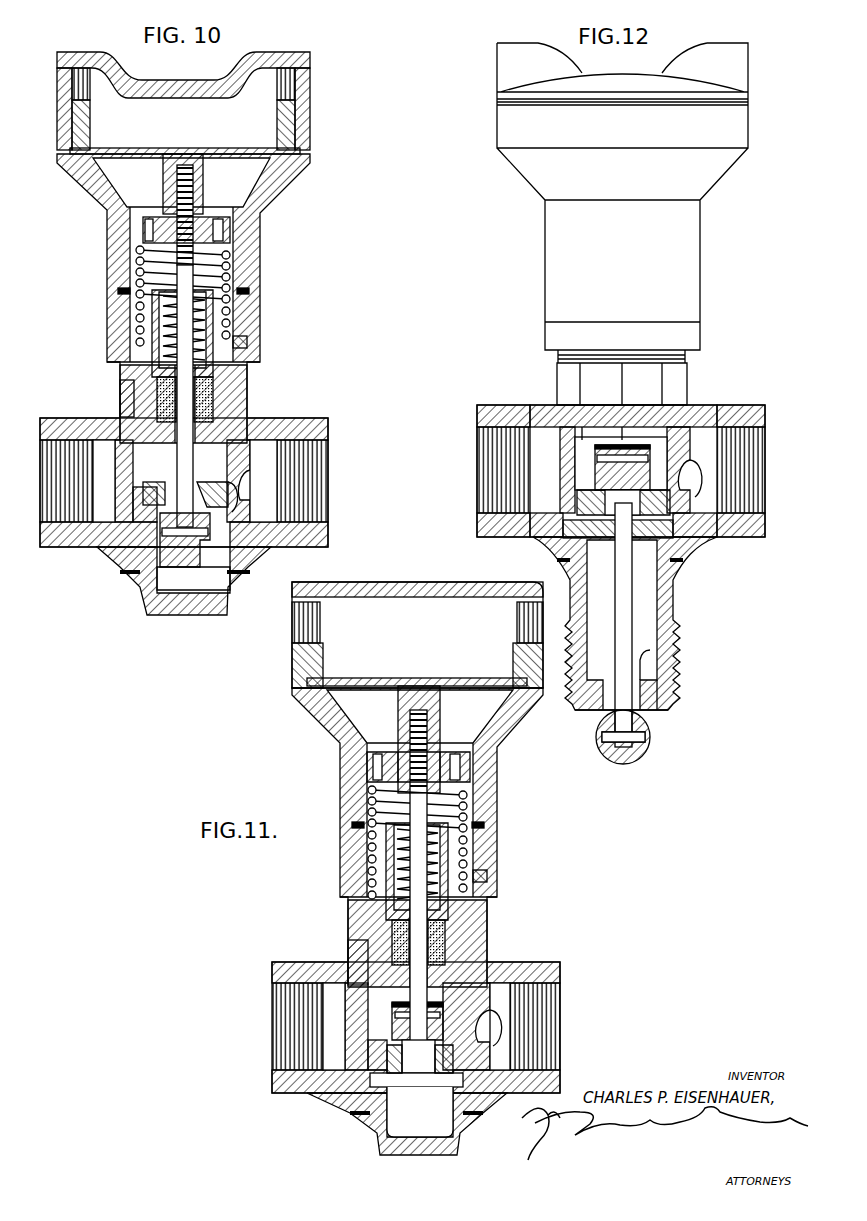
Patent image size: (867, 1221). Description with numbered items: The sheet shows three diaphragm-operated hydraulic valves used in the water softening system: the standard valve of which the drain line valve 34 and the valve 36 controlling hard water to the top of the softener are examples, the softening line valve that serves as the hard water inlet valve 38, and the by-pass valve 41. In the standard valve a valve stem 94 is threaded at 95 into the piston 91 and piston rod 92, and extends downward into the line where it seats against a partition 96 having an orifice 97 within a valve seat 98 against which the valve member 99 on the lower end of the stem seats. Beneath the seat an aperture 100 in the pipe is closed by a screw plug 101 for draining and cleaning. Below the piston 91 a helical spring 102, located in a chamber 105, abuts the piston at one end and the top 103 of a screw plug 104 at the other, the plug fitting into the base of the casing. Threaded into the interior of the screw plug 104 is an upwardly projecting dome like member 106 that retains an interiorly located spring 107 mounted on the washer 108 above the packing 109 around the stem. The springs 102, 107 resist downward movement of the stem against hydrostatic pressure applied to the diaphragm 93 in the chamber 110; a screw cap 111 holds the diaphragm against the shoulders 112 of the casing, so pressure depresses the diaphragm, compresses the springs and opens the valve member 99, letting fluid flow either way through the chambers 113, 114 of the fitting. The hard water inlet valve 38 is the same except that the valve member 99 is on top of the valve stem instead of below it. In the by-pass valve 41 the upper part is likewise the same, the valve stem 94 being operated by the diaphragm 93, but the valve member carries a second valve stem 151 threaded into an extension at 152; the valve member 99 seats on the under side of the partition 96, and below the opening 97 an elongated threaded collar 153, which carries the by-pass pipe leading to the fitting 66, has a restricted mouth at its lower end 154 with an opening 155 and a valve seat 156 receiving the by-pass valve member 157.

In FIG. 10, the drain line valve 34 is at (127, 50).
In FIG. 10, the valve controlling passage of hard water to the top of the softener 36 is at (63, 52).
In FIG. 11, the hard water inlet valve 38 is at (453, 582).
In FIG. 12, the by-pass valve 41 is at (693, 283).
In FIG. 12, the fitting 66 is at (700, 412).
In FIG. 10, the piston 91 is at (231, 240).
In FIG. 11, the piston 91 is at (471, 768).
In FIG. 10, the piston rod 92 is at (163, 180).
In FIG. 11, the piston rod 92 is at (397, 706).
In FIG. 10, the diaphragm 93 is at (200, 152).
In FIG. 11, the diaphragm 93 is at (364, 680).
In FIG. 10, the valve stem 94 is at (190, 275).
In FIG. 12, the valve stem 94 is at (617, 400).
In FIG. 11, the valve stem 94 is at (425, 812).
In FIG. 10, the threaded connection 95 is at (231, 227).
In FIG. 11, the threaded connection 95 is at (430, 731).
In FIG. 10, the partition 96 is at (237, 503).
In FIG. 12, the partition 96 is at (706, 498).
In FIG. 11, the partition 96 is at (462, 1043).
In FIG. 10, the orifice 97 is at (199, 487).
In FIG. 12, the orifice 97 is at (637, 500).
In FIG. 11, the orifice 97 is at (427, 1068).
In FIG. 10, the valve seat 98 is at (147, 487).
In FIG. 12, the valve seat 98 is at (582, 522).
In FIG. 11, the valve seat 98 is at (387, 1065).
In FIG. 10, the valve member 99 is at (225, 583).
In FIG. 12, the valve member 99 is at (652, 447).
In FIG. 11, the valve member 99 is at (435, 1020).
In FIG. 10, the aperture 100 is at (245, 570).
In FIG. 11, the aperture 100 is at (484, 1113).
In FIG. 10, the screw plug 101 is at (205, 612).
In FIG. 11, the screw plug 101 is at (460, 1145).
In FIG. 10, the helical spring 102 is at (214, 322).
In FIG. 11, the helical spring 102 is at (480, 848).
In FIG. 10, the top of screw plug 103 is at (248, 343).
In FIG. 11, the top of screw plug 103 is at (489, 882).
In FIG. 10, the screw plug 104 is at (237, 387).
In FIG. 11, the screw plug 104 is at (470, 940).
In FIG. 10, the chamber 105 is at (236, 288).
In FIG. 11, the chamber 105 is at (478, 824).
In FIG. 10, the dome like member 106 is at (112, 350).
In FIG. 11, the dome like member 106 is at (348, 900).
In FIG. 10, the interiorly located spring 107 is at (207, 303).
In FIG. 11, the interiorly located spring 107 is at (388, 823).
In FIG. 10, the washer 108 is at (208, 377).
In FIG. 11, the washer 108 is at (445, 923).
In FIG. 10, the packing 109 is at (127, 400).
In FIG. 11, the packing 109 is at (395, 947).
In FIG. 10, the chamber 110 is at (100, 118).
In FIG. 10, the screw cap 111 is at (297, 58).
In FIG. 11, the screw cap 111 is at (292, 598).
In FIG. 10, the shoulders 112 is at (293, 165).
In FIG. 11, the shoulders 112 is at (292, 686).
In FIG. 10, the chamber 113 is at (103, 512).
In FIG. 12, the chamber 113 is at (540, 487).
In FIG. 11, the chamber 113 is at (330, 1028).
In FIG. 10, the chamber 114 is at (267, 493).
In FIG. 12, the chamber 114 is at (705, 490).
In FIG. 11, the chamber 114 is at (502, 1042).
In FIG. 12, the second valve stem 151 is at (630, 573).
In FIG. 12, the threaded extension 152 is at (668, 533).
In FIG. 12, the elongated threaded collar 153 is at (670, 610).
In FIG. 12, the restricted mouth 154 is at (662, 688).
In FIG. 12, the opening 155 is at (642, 660).
In FIG. 12, the valve seat 156 is at (672, 706).
In FIG. 12, the by-pass valve member 157 is at (652, 723).